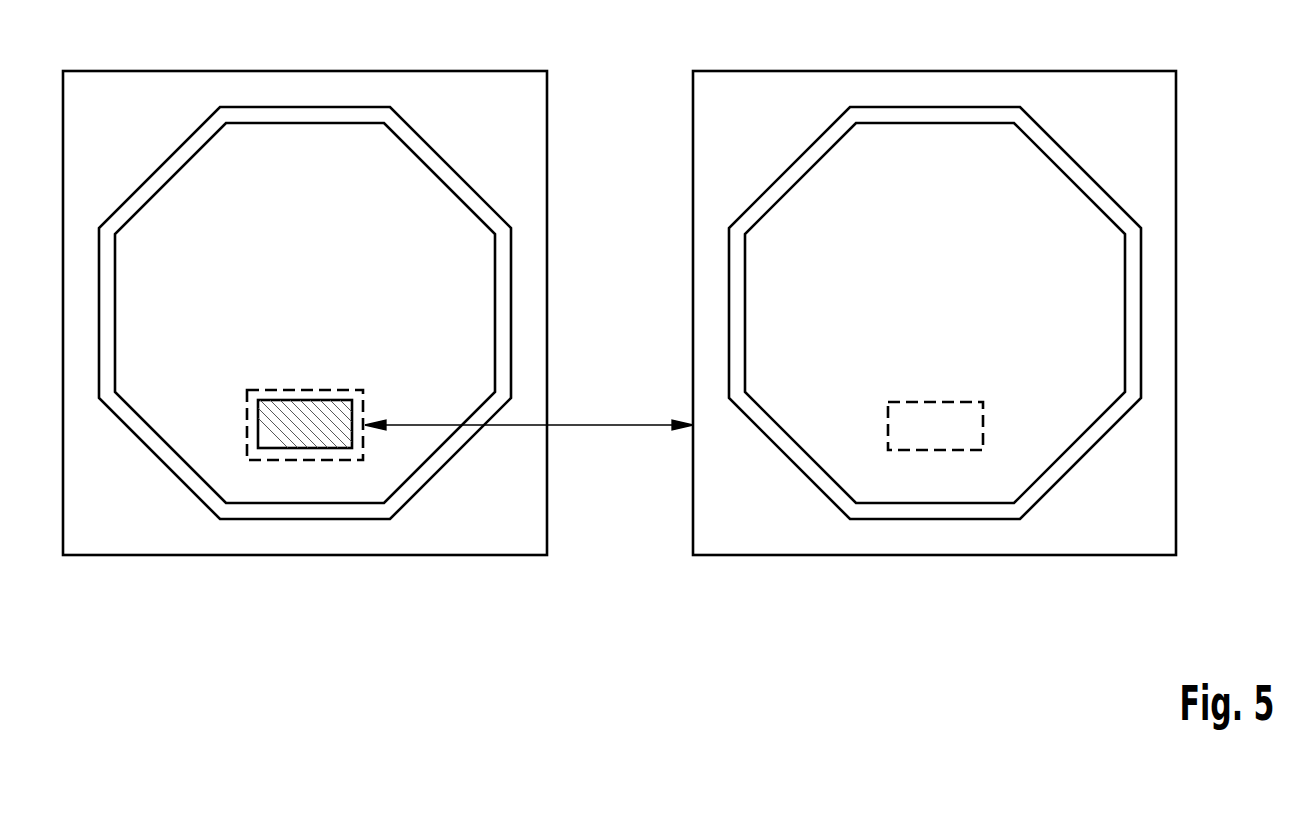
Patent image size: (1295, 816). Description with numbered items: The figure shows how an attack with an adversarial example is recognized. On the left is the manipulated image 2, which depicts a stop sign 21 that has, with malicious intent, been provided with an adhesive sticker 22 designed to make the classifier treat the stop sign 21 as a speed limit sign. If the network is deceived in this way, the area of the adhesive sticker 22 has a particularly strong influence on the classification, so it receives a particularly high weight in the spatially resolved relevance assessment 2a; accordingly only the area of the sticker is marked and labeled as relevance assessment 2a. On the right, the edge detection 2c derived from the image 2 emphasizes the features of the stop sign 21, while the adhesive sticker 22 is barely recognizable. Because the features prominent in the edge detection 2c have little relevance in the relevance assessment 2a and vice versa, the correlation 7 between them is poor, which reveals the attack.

The manipulated image 2 is at (497, 71).
The edge detection 2c is at (1127, 71).
The spatially resolved relevance assessment 2a is at (261, 461).
The stop sign 21 is at (451, 168).
The adhesive sticker 22 is at (303, 450).
The correlation 7 is at (616, 428).